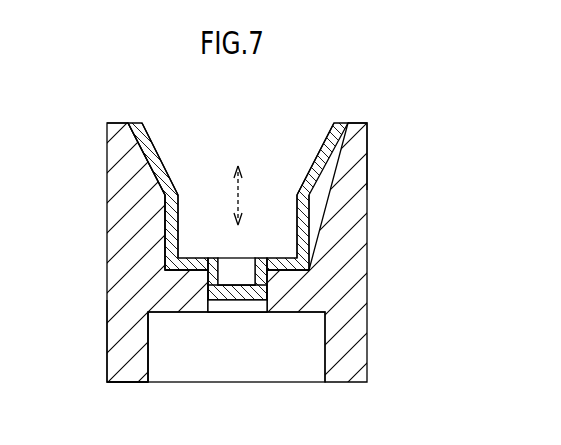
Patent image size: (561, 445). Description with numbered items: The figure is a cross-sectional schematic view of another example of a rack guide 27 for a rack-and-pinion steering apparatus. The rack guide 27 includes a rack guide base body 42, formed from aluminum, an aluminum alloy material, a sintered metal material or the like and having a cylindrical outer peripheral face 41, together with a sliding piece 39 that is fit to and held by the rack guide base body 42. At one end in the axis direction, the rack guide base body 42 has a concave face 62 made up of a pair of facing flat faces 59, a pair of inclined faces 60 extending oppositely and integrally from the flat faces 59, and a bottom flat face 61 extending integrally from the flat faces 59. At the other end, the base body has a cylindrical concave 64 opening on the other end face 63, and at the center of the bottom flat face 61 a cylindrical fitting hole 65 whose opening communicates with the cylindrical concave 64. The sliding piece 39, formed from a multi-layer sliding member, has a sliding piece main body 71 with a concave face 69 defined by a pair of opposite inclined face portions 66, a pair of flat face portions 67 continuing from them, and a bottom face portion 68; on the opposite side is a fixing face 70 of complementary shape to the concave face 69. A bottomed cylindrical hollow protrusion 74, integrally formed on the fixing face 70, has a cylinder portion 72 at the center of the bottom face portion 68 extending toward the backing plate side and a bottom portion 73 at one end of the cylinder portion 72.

The rack guide 27 is at (382, 355).
The sliding piece 39 is at (335, 124).
The cylindrical outer peripheral face 41 is at (367, 242).
The rack guide base body 42 is at (118, 319).
The flat faces 59 is at (165, 224).
The inclined faces 60 is at (135, 125).
The bottom flat face 61 is at (205, 268).
The concave face 62 is at (331, 140).
The other end face 63 is at (145, 382).
The cylindrical concave 64 is at (313, 370).
The cylindrical fitting hole 65 is at (254, 307).
The inclined face portions 66 is at (168, 188).
The flat face portions 67 is at (168, 252).
The bottom face portion 68 is at (266, 260).
The concave face 69 is at (146, 148).
The fixing face 70 is at (160, 173).
The sliding piece main body 71 is at (127, 126).
The cylinder portion 72 is at (262, 290).
The bottom portion 73 is at (234, 296).
The bottomed cylindrical hollow protrusion 74 is at (213, 312).